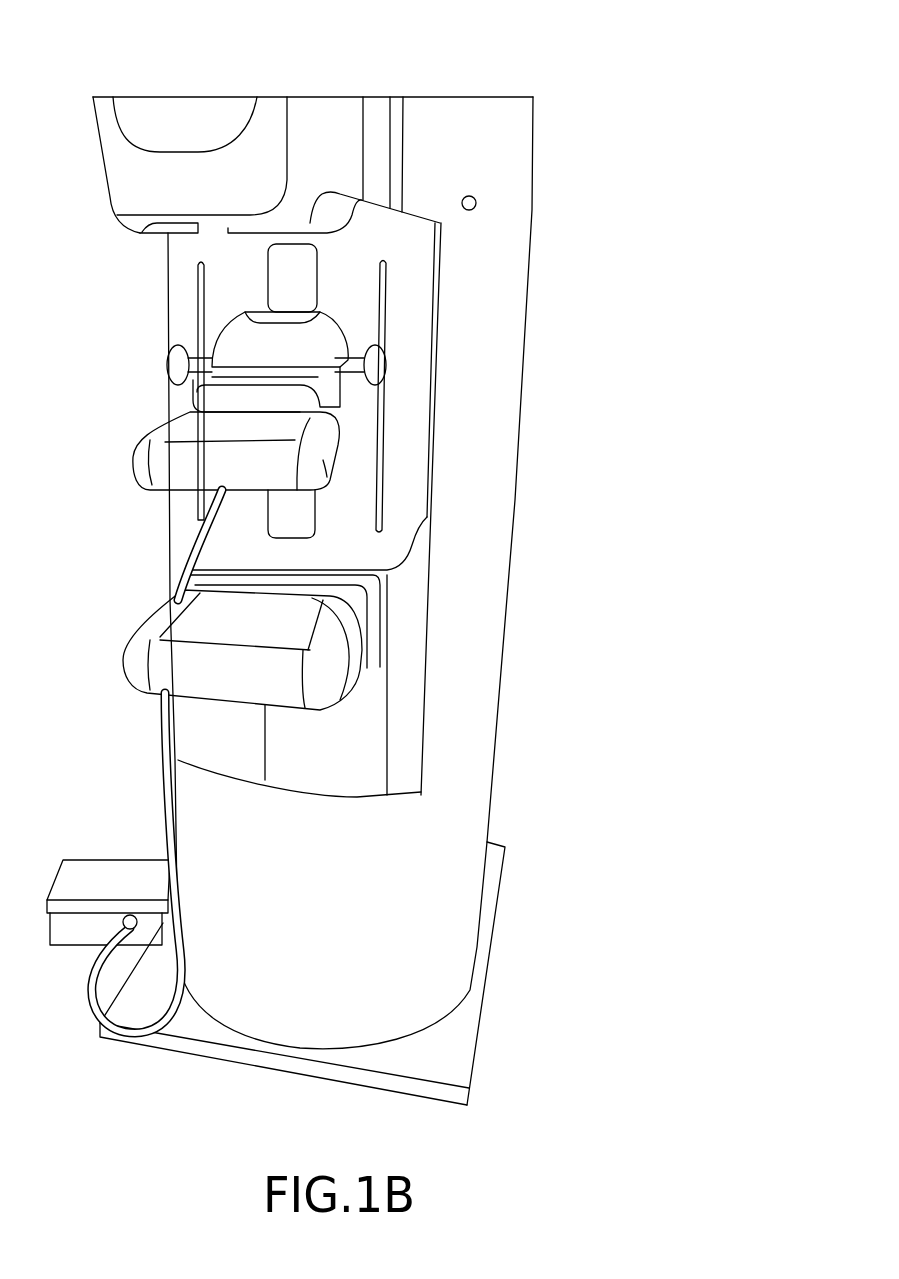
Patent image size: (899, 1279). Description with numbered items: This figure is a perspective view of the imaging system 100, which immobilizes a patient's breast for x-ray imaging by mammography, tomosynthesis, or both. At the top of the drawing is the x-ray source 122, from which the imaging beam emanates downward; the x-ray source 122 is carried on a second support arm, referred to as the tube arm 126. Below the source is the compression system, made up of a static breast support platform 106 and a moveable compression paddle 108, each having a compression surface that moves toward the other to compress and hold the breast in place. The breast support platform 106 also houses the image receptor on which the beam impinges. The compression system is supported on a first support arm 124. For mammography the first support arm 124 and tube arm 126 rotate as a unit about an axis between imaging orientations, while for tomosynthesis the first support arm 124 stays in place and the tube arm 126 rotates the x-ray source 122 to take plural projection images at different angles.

The imaging system 100 is at (632, 72).
The x-ray source 122 is at (335, 160).
The tube arm 126 is at (480, 320).
The first support arm 124 is at (403, 387).
The compression paddle 108 is at (327, 460).
The breast support platform 106 is at (350, 683).